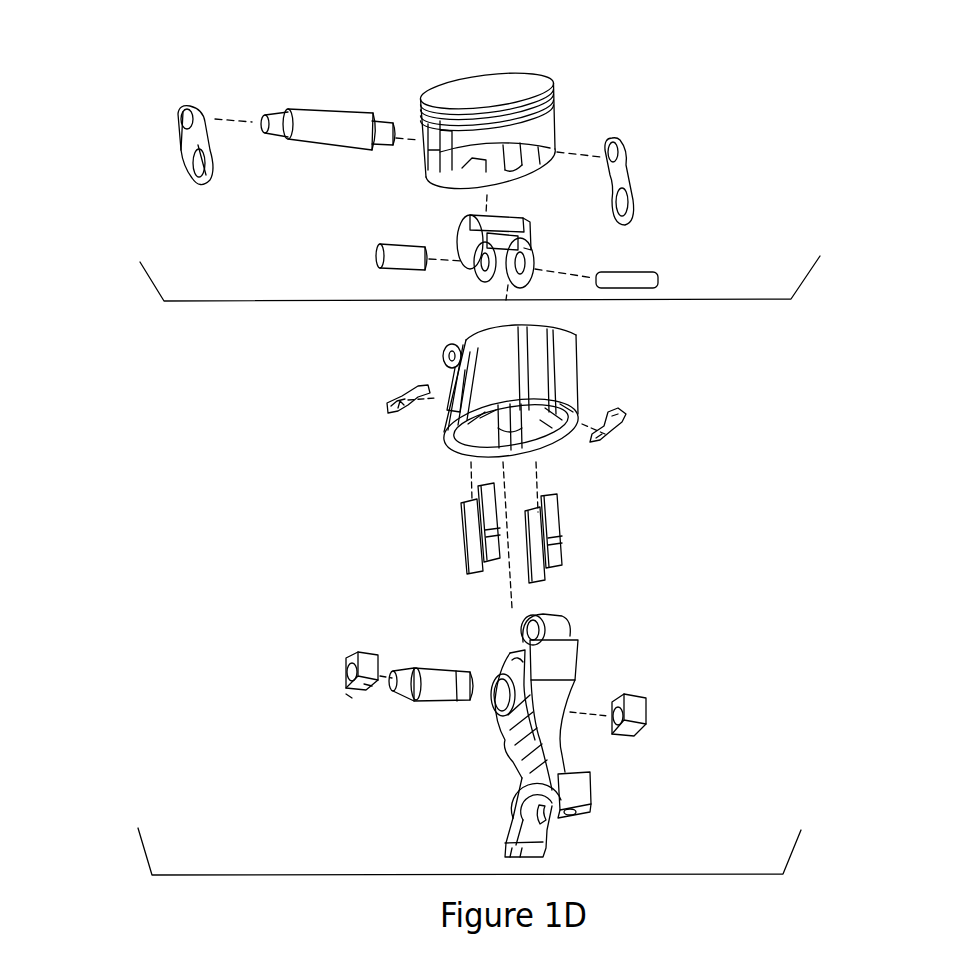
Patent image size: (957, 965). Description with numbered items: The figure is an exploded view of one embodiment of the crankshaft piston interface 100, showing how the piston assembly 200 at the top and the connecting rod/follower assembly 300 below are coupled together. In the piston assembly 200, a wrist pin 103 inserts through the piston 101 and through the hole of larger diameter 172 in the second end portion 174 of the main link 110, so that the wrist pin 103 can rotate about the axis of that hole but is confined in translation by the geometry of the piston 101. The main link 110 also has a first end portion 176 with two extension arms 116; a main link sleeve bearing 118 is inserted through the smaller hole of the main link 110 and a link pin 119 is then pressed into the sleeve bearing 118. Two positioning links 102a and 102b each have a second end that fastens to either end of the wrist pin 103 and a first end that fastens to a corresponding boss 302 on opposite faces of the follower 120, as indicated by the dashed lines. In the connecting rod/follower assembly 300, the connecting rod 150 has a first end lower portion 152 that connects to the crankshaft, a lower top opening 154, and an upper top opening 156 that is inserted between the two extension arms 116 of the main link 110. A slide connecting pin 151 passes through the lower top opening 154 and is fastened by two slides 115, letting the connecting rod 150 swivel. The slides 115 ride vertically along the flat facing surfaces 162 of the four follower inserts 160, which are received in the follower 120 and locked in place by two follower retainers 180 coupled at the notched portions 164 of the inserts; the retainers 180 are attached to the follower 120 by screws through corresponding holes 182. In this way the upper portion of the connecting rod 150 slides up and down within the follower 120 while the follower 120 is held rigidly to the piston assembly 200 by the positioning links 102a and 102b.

The crankshaft piston interface 100 is at (848, 923).
The piston 101 is at (468, 72).
The positioning link 102a is at (203, 190).
The positioning link 102b is at (620, 143).
The wrist pin 103 is at (266, 110).
The main link 110 is at (494, 261).
The slides 115 is at (355, 644).
The extension arms 116 is at (532, 250).
The main link sleeve bearing 118 is at (380, 244).
The link pin 119 is at (658, 272).
The follower 120 is at (463, 408).
The connecting rod 150 is at (562, 735).
The slide connecting pin 151 is at (425, 702).
The first end lower portion 152 is at (582, 793).
The lower top opening 154 is at (503, 703).
The upper top opening 156 is at (533, 630).
The follower inserts 160 is at (576, 590).
The flat facing surfaces 162 is at (468, 522).
The notched portions 164 is at (562, 540).
The hole of larger diameter 172 is at (460, 222).
The second end portion 174 is at (466, 219).
The first end portion 176 is at (528, 285).
The follower retainers 180 is at (390, 400).
The holes 182 is at (386, 408).
The piston assembly 200 is at (130, 73).
The connecting rod/follower assembly 300 is at (138, 331).
The boss 302 is at (447, 370).